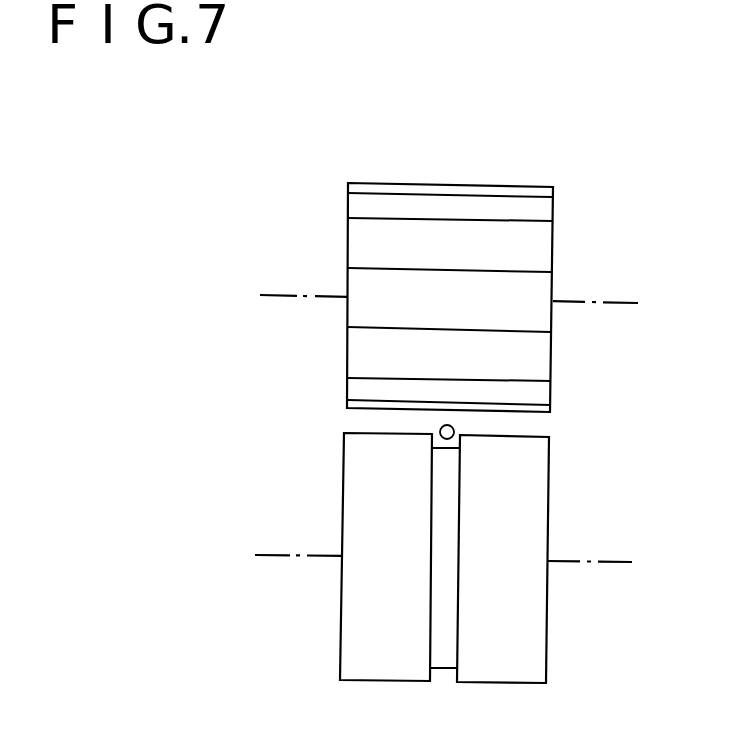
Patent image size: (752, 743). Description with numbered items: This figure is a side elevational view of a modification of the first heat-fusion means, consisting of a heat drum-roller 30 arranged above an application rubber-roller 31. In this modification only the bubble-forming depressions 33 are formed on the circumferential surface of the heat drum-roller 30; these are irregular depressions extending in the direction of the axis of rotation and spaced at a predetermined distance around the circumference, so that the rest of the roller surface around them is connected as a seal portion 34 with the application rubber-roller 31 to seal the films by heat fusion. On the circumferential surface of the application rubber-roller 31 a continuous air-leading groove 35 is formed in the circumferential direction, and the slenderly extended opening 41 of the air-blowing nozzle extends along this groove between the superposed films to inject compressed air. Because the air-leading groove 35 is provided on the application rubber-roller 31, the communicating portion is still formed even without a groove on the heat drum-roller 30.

The heat drum-roller 30 is at (348, 223).
The application rubber-roller 31 is at (546, 590).
The bubble-forming depressions 33 is at (507, 240).
The seal portion 34 is at (507, 195).
The air-leading groove 35 is at (445, 628).
The slenderly extended opening 41 is at (454, 428).